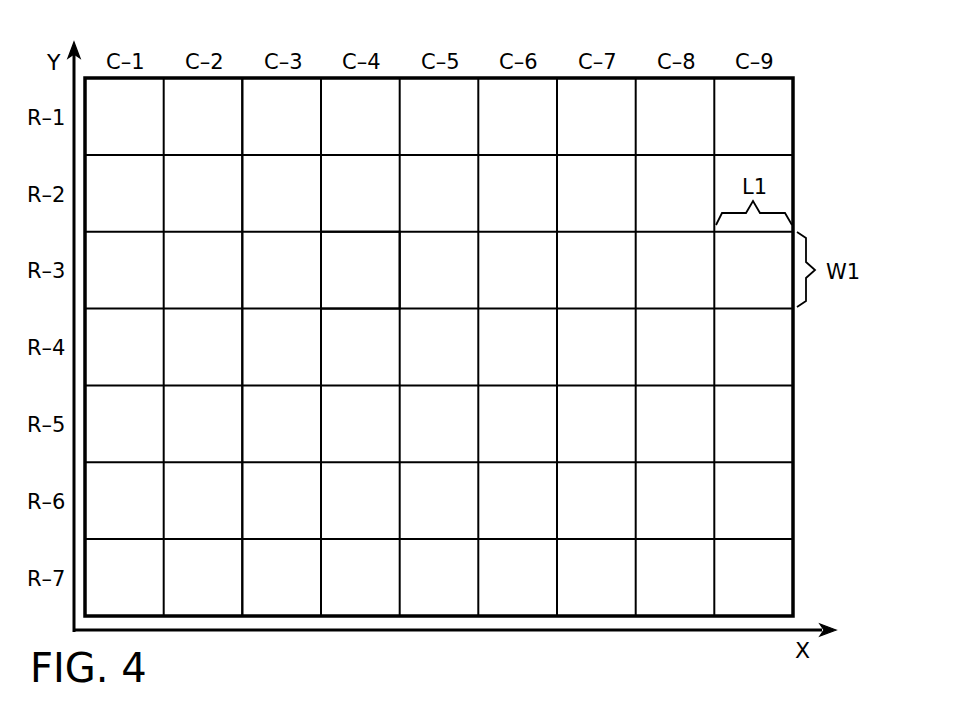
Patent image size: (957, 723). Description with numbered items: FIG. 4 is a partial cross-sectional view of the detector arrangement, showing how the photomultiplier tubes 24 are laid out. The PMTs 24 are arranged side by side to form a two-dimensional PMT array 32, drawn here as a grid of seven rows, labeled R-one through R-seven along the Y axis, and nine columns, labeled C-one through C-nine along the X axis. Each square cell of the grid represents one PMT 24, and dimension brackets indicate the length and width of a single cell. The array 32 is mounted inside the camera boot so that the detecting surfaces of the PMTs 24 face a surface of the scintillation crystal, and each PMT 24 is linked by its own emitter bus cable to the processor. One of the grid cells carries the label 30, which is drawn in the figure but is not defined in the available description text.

The photomultiplier tubes 24 is at (257, 607).
The pixel cell 30 is at (373, 286).
The PMT array 32 is at (280, 46).